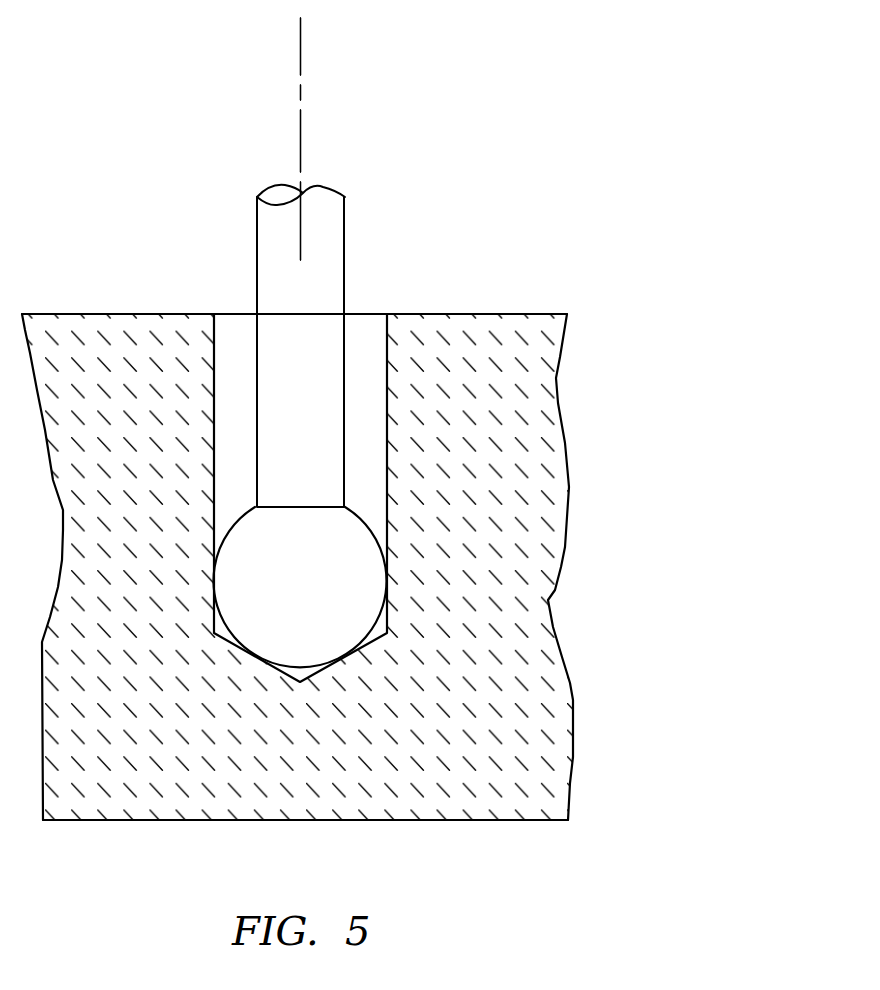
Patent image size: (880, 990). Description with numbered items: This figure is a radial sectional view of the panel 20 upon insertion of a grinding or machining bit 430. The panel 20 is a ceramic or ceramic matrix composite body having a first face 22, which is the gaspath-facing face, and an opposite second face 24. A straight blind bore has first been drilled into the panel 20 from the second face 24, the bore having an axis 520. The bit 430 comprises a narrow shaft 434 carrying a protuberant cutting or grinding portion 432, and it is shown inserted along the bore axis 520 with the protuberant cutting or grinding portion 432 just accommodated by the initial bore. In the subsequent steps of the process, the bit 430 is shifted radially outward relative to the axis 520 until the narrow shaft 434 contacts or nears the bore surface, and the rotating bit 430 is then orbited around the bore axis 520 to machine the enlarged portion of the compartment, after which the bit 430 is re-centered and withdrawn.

The panel 20 is at (518, 564).
The first face 22 is at (543, 821).
The second face 24 is at (512, 314).
The bit 430 is at (326, 426).
The protuberant cutting or grinding portion 432 is at (354, 552).
The narrow shaft 434 is at (268, 250).
The axis 520 is at (301, 50).